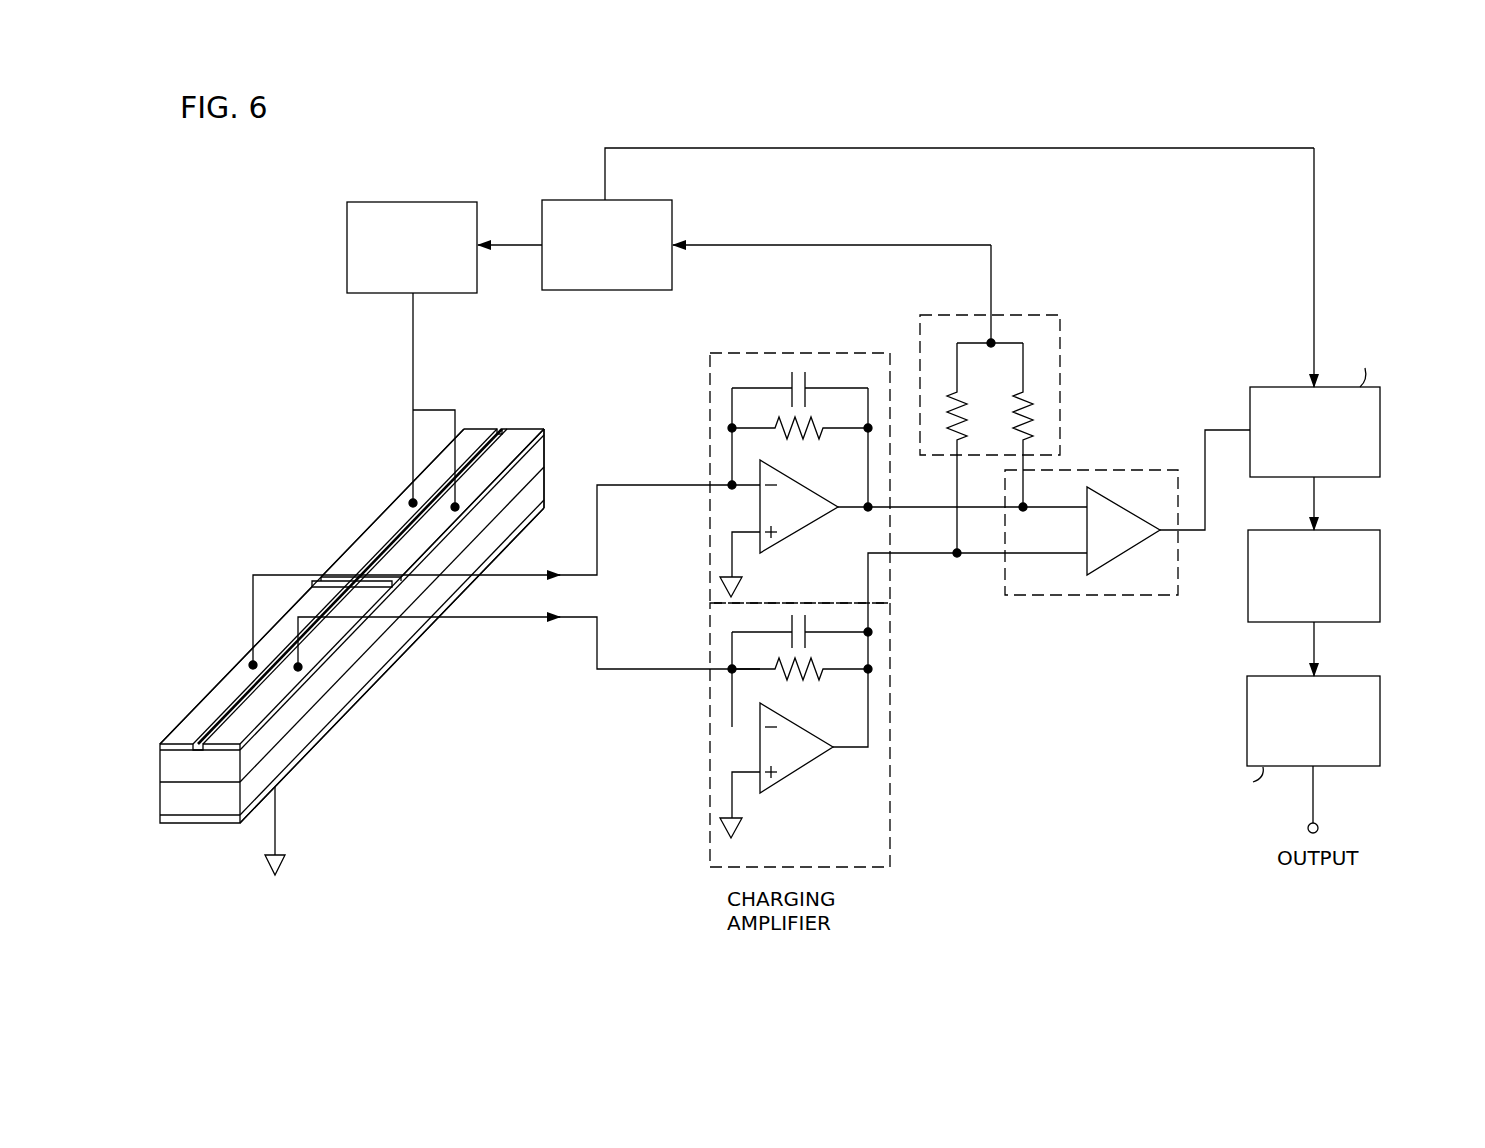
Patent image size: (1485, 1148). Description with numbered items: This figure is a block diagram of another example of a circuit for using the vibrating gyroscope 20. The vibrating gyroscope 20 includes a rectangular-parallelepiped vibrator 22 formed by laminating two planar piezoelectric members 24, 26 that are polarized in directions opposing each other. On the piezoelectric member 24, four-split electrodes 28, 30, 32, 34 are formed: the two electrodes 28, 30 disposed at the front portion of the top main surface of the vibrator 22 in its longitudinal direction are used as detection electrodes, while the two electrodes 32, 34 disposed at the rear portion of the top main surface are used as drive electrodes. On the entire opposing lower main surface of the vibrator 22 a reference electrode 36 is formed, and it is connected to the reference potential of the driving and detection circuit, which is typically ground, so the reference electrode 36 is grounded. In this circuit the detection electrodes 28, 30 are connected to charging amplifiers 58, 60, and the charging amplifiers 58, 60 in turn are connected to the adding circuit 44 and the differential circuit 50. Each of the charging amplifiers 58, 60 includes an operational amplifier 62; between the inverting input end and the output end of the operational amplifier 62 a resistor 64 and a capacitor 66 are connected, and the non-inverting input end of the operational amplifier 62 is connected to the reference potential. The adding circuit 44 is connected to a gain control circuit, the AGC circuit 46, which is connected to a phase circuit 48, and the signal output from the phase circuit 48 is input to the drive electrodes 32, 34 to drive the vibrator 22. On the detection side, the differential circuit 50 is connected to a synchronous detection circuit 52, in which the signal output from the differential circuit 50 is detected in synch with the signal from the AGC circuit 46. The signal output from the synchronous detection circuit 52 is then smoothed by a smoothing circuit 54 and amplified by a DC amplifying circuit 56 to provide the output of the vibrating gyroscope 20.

The vibrating gyroscope 20 is at (306, 457).
The vibrator 22 is at (545, 457).
The piezoelectric member 24 is at (350, 652).
The piezoelectric member 26 is at (340, 688).
The detection electrode 28 is at (203, 718).
The detection electrode 30 is at (253, 708).
The drive electrode 32 is at (374, 545).
The drive electrode 34 is at (428, 532).
The reference electrode 36 is at (323, 740).
The adding circuit 44 is at (1060, 353).
The AGC circuit 46 is at (575, 200).
The phase circuit 48 is at (378, 202).
The differential circuit 50 is at (1030, 595).
The synchronous detection circuit 52 is at (1267, 387).
The smoothing circuit 54 is at (1280, 530).
The DC amplifying circuit 56 is at (1265, 676).
The charging amplifier 58 is at (710, 380).
The charging amplifier 60 is at (710, 800).
The operational amplifier 62 is at (798, 532).
The resistor 64 is at (817, 430).
The capacitor 66 is at (807, 376).